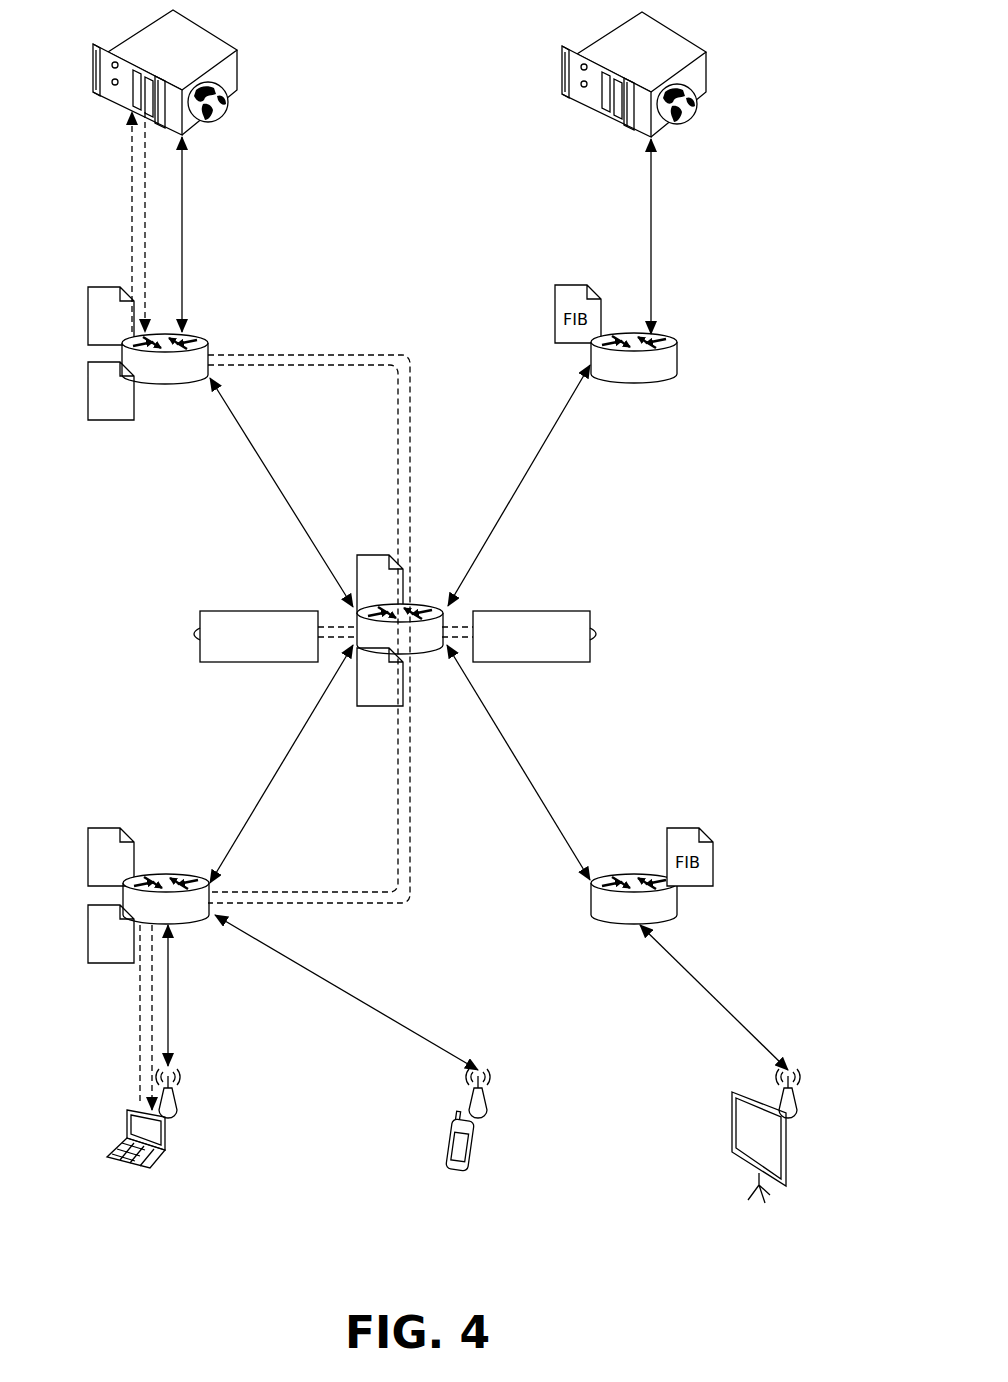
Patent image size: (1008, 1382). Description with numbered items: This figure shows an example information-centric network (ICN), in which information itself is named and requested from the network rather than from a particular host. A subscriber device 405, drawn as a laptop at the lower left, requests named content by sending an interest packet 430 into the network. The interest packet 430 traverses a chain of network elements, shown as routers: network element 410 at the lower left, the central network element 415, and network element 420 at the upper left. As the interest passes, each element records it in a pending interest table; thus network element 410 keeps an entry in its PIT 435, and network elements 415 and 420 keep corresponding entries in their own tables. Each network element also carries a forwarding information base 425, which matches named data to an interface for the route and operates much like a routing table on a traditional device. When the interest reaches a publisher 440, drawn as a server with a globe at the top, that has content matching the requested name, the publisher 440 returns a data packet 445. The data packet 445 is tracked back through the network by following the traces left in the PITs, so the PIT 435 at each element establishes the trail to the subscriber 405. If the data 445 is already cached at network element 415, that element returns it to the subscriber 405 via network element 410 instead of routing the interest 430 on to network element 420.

The device 405 is at (125, 1110).
The network element 410 is at (144, 921).
The network element 415 is at (420, 650).
The network element 420 is at (210, 340).
The forwarding information base 425 is at (88, 858).
The interest packet 430 is at (258, 610).
The pending interest table 435 is at (88, 928).
The publisher 440 is at (135, 30).
The data packet 445 is at (530, 610).